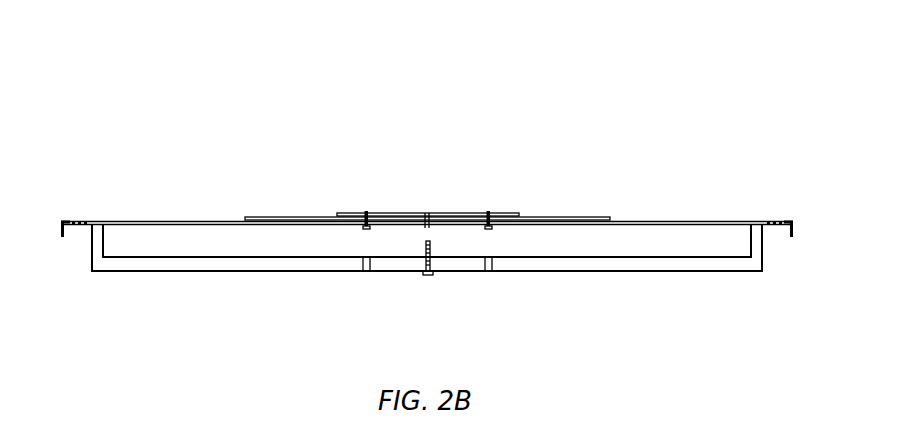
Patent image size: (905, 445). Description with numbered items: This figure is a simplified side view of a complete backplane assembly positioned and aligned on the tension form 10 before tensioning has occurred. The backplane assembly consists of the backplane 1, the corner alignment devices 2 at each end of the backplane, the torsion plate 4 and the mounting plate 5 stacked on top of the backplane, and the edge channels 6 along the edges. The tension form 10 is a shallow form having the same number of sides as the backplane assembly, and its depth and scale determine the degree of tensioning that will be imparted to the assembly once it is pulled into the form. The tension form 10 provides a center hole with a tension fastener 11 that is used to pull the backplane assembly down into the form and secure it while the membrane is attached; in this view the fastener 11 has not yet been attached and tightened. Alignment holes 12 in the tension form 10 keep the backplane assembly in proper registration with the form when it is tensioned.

The backplane 1 is at (181, 221).
The corner alignment devices 2 is at (81, 220).
The torsion plate 4 is at (285, 217).
The mounting plate 5 is at (442, 216).
The edge channels 6 is at (62, 238).
The tension form 10 is at (207, 259).
The tension fastener 11 is at (428, 278).
The alignment holes 12 is at (362, 268).